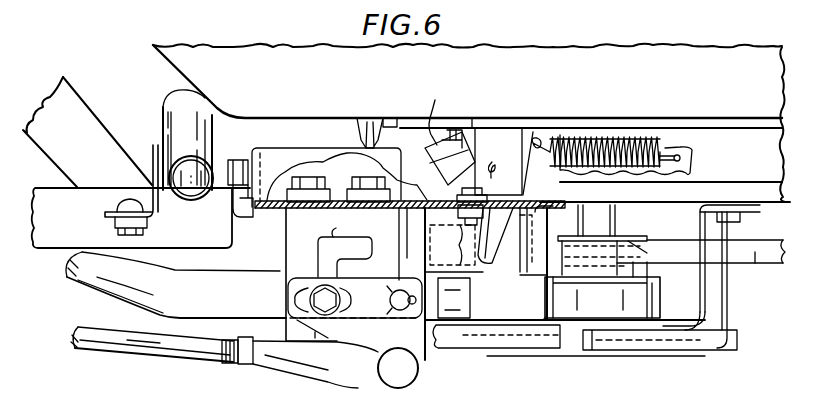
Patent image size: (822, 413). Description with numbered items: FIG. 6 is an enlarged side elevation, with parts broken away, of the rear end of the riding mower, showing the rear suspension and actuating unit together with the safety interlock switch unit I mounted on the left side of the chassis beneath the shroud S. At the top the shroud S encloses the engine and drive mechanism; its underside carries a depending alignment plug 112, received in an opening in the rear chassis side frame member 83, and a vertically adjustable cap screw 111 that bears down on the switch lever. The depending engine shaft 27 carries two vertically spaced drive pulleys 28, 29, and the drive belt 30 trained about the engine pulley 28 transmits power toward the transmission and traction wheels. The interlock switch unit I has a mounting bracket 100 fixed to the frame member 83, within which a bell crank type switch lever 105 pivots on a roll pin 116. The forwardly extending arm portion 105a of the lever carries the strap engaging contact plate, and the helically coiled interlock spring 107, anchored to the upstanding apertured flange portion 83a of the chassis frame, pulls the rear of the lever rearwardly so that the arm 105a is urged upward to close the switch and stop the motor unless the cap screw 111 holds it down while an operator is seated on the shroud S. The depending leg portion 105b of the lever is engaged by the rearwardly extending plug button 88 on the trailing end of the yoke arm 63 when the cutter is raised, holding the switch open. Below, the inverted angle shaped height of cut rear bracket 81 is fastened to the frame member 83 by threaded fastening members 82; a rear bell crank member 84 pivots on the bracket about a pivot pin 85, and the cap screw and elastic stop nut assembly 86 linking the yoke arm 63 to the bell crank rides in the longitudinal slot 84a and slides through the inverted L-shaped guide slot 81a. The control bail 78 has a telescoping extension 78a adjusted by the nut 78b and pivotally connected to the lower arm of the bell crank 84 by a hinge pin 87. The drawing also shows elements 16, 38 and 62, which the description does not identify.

The roller and support plate 16 is at (90, 121).
The mounting plate 38 is at (68, 233).
The yoke arm 63 is at (110, 292).
The control bail 78 is at (137, 348).
The axially adjustable extension 78a is at (328, 368).
The adjustment nut 78b is at (243, 365).
The height of cut rear bracket 81 is at (287, 245).
The right angle guide slot 81a is at (346, 247).
The threaded fastening member 82 is at (330, 167).
The rear chassis side frame member 83 is at (277, 210).
The upstanding apertured flange portion 83a is at (674, 147).
The rear bell crank member 84 is at (380, 317).
The longitudinal slot 84a is at (293, 296).
The pivot pin 85 is at (401, 288).
The cap screw and elastic stop nut assembly 86 is at (325, 300).
The hinge pin 87 is at (409, 377).
The plug button 88 is at (462, 300).
The mounting bracket 100 is at (510, 156).
The switch lever 105 is at (528, 163).
The forwardly extending arm portion 105a is at (431, 157).
The depending leg portion 105b is at (487, 260).
The interlock spring 107 is at (572, 140).
The cap screw 111 is at (449, 118).
The alignment plug 112 is at (357, 128).
The roll pin 116 is at (506, 178).
The engine shaft 27 is at (602, 220).
The drive pulley 28 is at (634, 236).
The drive pulley 29 is at (572, 352).
The drive belt 30 is at (755, 263).
The slab 62 is at (470, 347).
The shroud S is at (592, 46).
The safety interlock switch unit I is at (500, 113).